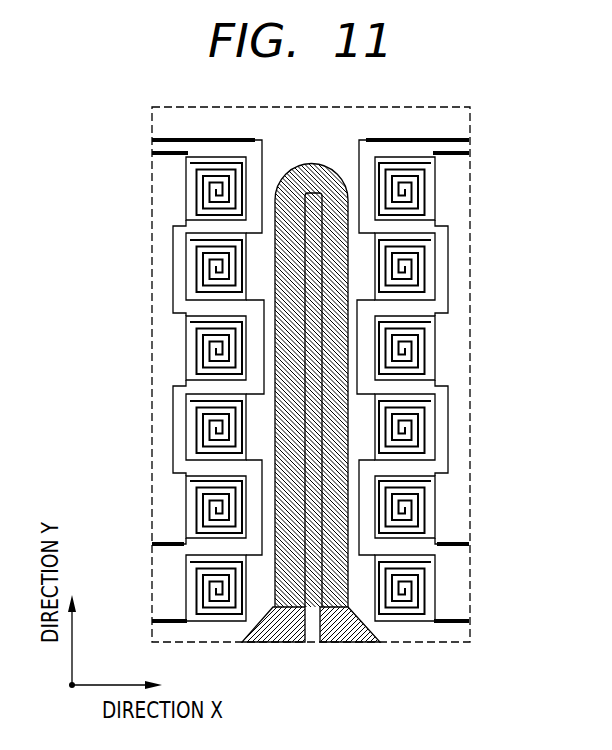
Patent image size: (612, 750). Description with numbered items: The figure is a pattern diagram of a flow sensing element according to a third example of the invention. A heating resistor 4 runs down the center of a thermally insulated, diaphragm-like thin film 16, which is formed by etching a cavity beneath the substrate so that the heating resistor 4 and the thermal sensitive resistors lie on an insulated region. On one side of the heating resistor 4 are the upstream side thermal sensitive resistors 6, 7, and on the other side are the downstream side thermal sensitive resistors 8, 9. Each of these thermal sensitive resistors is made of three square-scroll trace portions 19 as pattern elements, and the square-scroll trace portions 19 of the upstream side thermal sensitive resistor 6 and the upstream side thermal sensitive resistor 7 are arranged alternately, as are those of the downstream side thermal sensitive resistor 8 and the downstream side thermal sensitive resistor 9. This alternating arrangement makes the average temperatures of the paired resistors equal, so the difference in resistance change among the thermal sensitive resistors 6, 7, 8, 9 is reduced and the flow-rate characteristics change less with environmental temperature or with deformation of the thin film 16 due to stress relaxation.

The heating resistor 4 is at (342, 218).
The upstream side thermal sensitive resistor 6 is at (139, 348).
The upstream side thermal sensitive resistor 7 is at (207, 433).
The downstream side thermal sensitive resistor 8 is at (410, 352).
The downstream side thermal sensitive resistor 9 is at (407, 428).
The thin film 16 is at (173, 127).
The square-scroll trace portion 19 is at (212, 195).